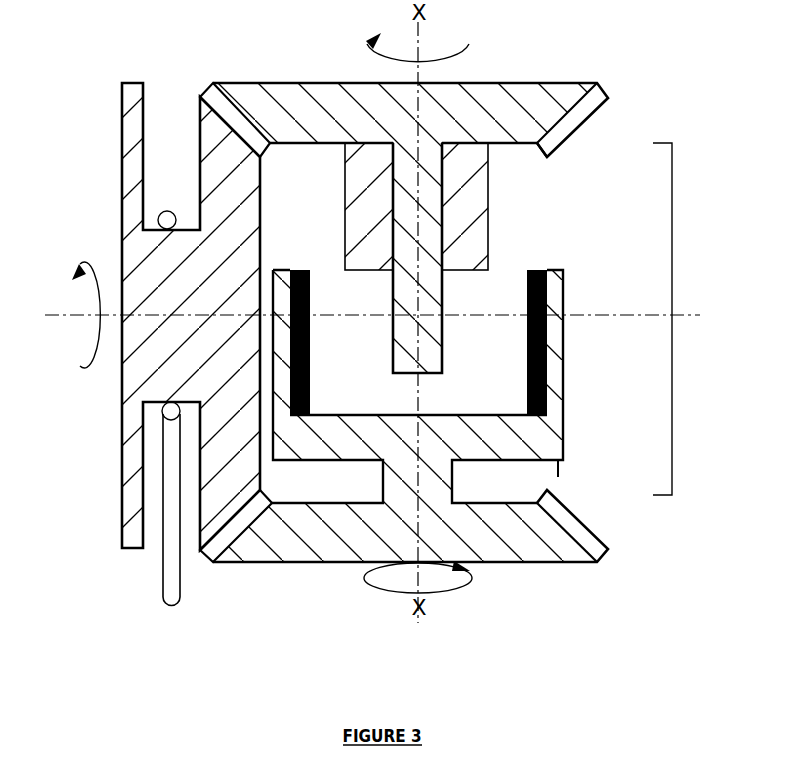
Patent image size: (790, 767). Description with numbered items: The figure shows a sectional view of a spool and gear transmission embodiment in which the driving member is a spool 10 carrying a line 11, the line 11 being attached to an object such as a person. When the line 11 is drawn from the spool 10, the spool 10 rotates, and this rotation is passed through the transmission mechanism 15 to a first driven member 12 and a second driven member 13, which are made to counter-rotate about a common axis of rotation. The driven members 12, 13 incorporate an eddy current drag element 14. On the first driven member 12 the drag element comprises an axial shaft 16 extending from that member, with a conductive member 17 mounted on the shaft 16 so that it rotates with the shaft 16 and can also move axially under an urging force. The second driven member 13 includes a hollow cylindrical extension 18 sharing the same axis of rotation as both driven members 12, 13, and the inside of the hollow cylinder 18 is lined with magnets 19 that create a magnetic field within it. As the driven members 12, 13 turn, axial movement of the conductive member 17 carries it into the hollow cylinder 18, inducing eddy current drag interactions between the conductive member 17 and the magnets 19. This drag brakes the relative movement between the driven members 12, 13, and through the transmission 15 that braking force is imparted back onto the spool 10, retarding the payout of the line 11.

The spool 10 is at (120, 97).
The line 11 is at (160, 575).
The first driven member 12 is at (522, 83).
The second driven member 13 is at (323, 562).
The eddy current drag element 14 is at (672, 363).
The transmission mechanism 15 is at (205, 88).
The axial shaft 16 is at (424, 221).
The conductive member 17 is at (345, 173).
The hollow cylindrical extension 18 is at (558, 477).
The magnets 19 is at (286, 385).